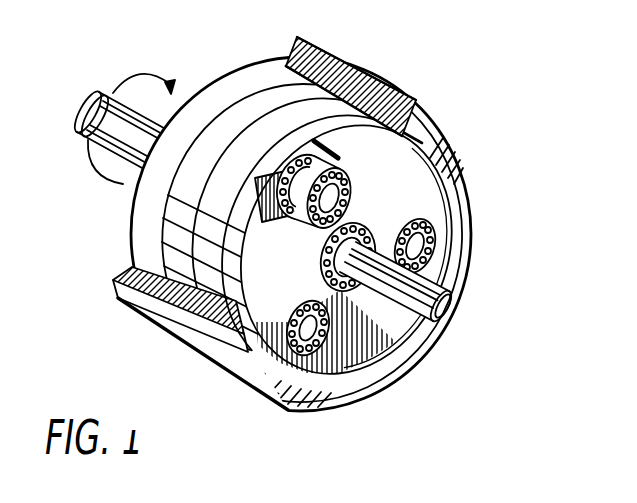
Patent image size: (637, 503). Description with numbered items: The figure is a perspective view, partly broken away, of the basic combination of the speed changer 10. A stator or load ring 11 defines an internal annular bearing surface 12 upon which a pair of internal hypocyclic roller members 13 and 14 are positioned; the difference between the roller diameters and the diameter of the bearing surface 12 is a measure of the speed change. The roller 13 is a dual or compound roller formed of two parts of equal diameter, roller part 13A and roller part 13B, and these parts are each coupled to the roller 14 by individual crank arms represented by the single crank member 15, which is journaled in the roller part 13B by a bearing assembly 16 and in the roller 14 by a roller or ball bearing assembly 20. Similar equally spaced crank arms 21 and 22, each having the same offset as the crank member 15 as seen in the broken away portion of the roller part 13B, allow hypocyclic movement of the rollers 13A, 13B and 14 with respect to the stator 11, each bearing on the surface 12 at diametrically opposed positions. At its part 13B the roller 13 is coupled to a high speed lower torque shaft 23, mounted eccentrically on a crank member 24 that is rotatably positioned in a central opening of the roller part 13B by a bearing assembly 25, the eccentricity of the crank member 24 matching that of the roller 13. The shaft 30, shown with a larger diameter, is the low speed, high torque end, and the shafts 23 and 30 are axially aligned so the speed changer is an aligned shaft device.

The speed changer 10 is at (326, 408).
The stator or load ring 11 is at (336, 46).
The internal annular bearing surface 12 is at (353, 67).
The internal hypocyclic roller member 13 is at (246, 108).
The roller part 13A is at (163, 226).
The roller part 13B is at (218, 360).
The internal hypocyclic roller member 14 is at (240, 197).
The crank member 15 is at (338, 162).
The bearing assembly 16 is at (352, 192).
The roller or ball bearing assembly 20 is at (324, 180).
The crank arm 21 is at (326, 348).
The crank arm 22 is at (428, 247).
The high speed lower torque shaft 23 is at (452, 306).
The crank member 24 is at (324, 250).
The bearing assembly 25 is at (341, 289).
The shaft 30 is at (79, 105).